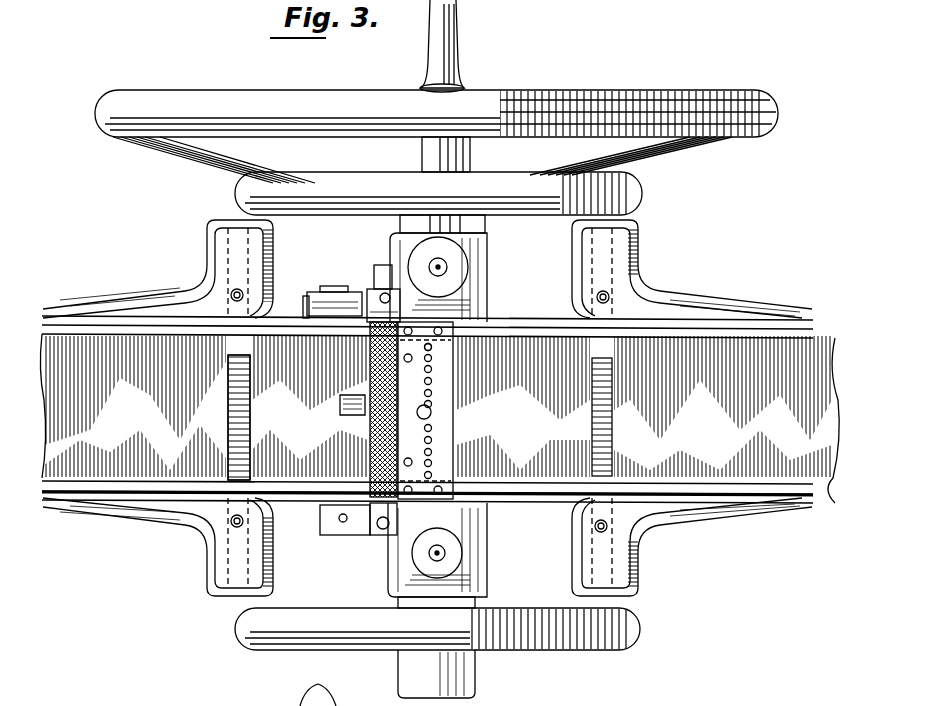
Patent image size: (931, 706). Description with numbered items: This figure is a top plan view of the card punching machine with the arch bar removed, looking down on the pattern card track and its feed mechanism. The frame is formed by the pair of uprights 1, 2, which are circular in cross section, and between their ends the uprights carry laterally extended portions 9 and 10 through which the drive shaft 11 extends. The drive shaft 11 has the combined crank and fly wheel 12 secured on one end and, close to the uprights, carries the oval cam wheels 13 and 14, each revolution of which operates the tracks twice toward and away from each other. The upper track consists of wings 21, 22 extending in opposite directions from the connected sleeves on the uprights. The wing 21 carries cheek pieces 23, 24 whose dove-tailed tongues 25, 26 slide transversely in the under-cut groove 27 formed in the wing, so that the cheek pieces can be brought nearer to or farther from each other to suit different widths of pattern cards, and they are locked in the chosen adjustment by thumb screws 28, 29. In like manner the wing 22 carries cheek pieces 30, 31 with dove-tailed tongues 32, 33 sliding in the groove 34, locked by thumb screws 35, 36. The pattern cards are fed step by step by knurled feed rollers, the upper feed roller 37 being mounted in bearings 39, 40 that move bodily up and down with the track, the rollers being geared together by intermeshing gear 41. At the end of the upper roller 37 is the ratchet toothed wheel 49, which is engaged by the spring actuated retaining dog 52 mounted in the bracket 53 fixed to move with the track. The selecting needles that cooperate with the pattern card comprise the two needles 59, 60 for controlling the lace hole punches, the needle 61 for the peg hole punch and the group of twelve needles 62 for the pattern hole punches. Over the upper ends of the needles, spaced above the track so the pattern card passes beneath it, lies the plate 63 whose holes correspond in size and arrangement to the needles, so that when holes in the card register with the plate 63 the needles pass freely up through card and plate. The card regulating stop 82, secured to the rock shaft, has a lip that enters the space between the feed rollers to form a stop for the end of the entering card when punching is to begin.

The upright 1 is at (452, 555).
The upright 2 is at (452, 268).
The laterally extended portion 9 is at (479, 548).
The laterally extended portion 10 is at (480, 258).
The drive shaft 11 is at (414, 612).
The combined crank and fly wheel 12 is at (436, 113).
The cam wheel 13 is at (437, 629).
The cam wheel 14 is at (438, 193).
The wing 21 is at (236, 390).
The wing 22 is at (439, 418).
The cheek piece 23 is at (158, 306).
The cheek piece 24 is at (170, 514).
The dove-tailed tongue 25 is at (239, 348).
The dove-tailed tongue 26 is at (237, 470).
The dove-tailed groove 27 is at (270, 417).
The thumb screw 28 is at (244, 290).
The thumb screw 29 is at (237, 525).
The cheek piece 30 is at (682, 320).
The cheek piece 31 is at (660, 510).
The dove-tailed tongue 32 is at (601, 348).
The dove-tailed tongue 33 is at (634, 548).
The dove-tailed groove 34 is at (604, 440).
The thumb screw 35 is at (607, 292).
The thumb screw 36 is at (597, 529).
The upper feed roller 37 is at (370, 377).
The bearing 39 is at (380, 296).
The bearing 40 is at (378, 528).
The intermeshing gear 41 is at (368, 512).
The ratchet toothed wheel 49 is at (385, 290).
The retaining dog 52 is at (315, 322).
The bracket 53 is at (325, 300).
The selecting needle 59 is at (404, 463).
The selecting needle 60 is at (404, 358).
The selecting needle 61 is at (432, 412).
The selecting needles 62 is at (440, 363).
The plate 63 is at (446, 346).
The card regulating stop 82 is at (345, 410).